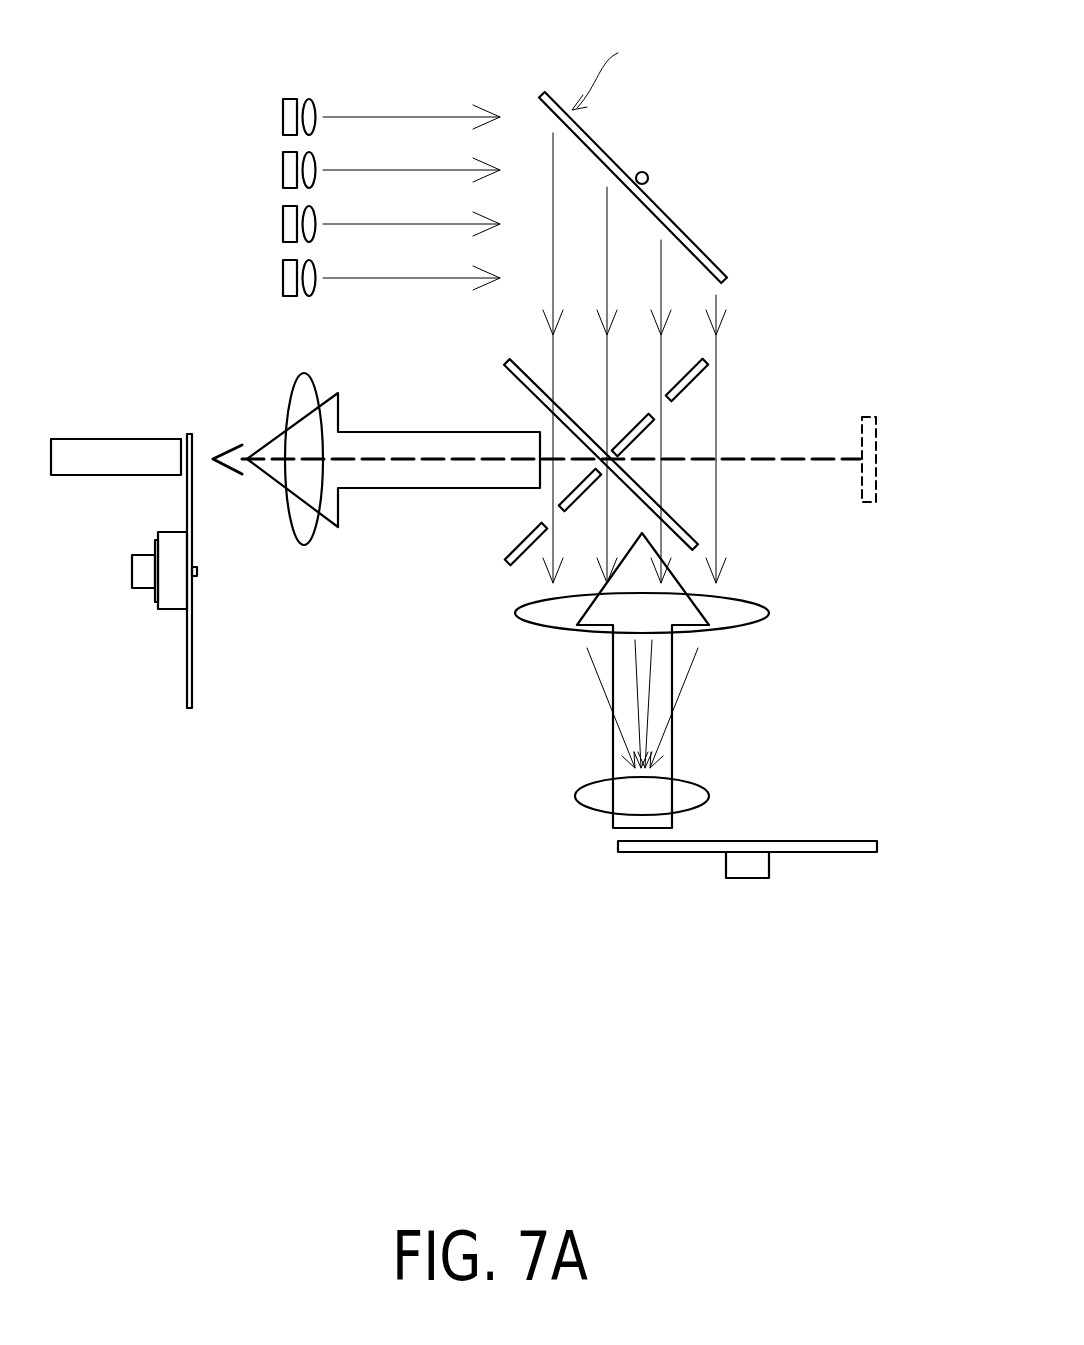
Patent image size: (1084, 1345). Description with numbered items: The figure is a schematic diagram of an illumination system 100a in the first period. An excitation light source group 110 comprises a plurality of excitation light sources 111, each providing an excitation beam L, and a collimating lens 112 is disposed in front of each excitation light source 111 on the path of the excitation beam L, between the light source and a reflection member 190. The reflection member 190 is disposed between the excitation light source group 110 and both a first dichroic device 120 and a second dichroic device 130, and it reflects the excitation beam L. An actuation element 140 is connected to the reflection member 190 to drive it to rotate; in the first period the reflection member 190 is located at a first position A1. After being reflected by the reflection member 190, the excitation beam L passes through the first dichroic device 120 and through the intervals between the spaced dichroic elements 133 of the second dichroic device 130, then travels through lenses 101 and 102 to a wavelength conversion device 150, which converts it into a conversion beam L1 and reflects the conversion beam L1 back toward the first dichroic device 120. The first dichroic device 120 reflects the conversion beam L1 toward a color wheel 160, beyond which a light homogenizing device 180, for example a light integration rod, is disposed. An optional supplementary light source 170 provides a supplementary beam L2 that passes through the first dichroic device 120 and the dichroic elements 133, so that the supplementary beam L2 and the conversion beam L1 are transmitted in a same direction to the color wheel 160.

The illumination system 100a is at (252, 33).
The excitation light source group 110 is at (269, 212).
The excitation light source 111 is at (288, 118).
The collimating lens 112 is at (312, 100).
The first dichroic device 120 is at (507, 362).
The second dichroic device 130 is at (500, 569).
The dichroic element 133 is at (713, 380).
The actuation element 140 is at (648, 173).
The wavelength conversion device 150 is at (845, 847).
The color wheel 160 is at (192, 660).
The supplementary light source 170 is at (868, 485).
The light homogenizing device 180 is at (107, 452).
The reflection member 190 is at (598, 142).
The lens 101 is at (760, 613).
The lens 102 is at (590, 793).
The excitation beam L is at (402, 115).
The conversion beam L1 is at (415, 432).
The supplementary beam L2 is at (788, 463).
The first position A1 is at (612, 75).